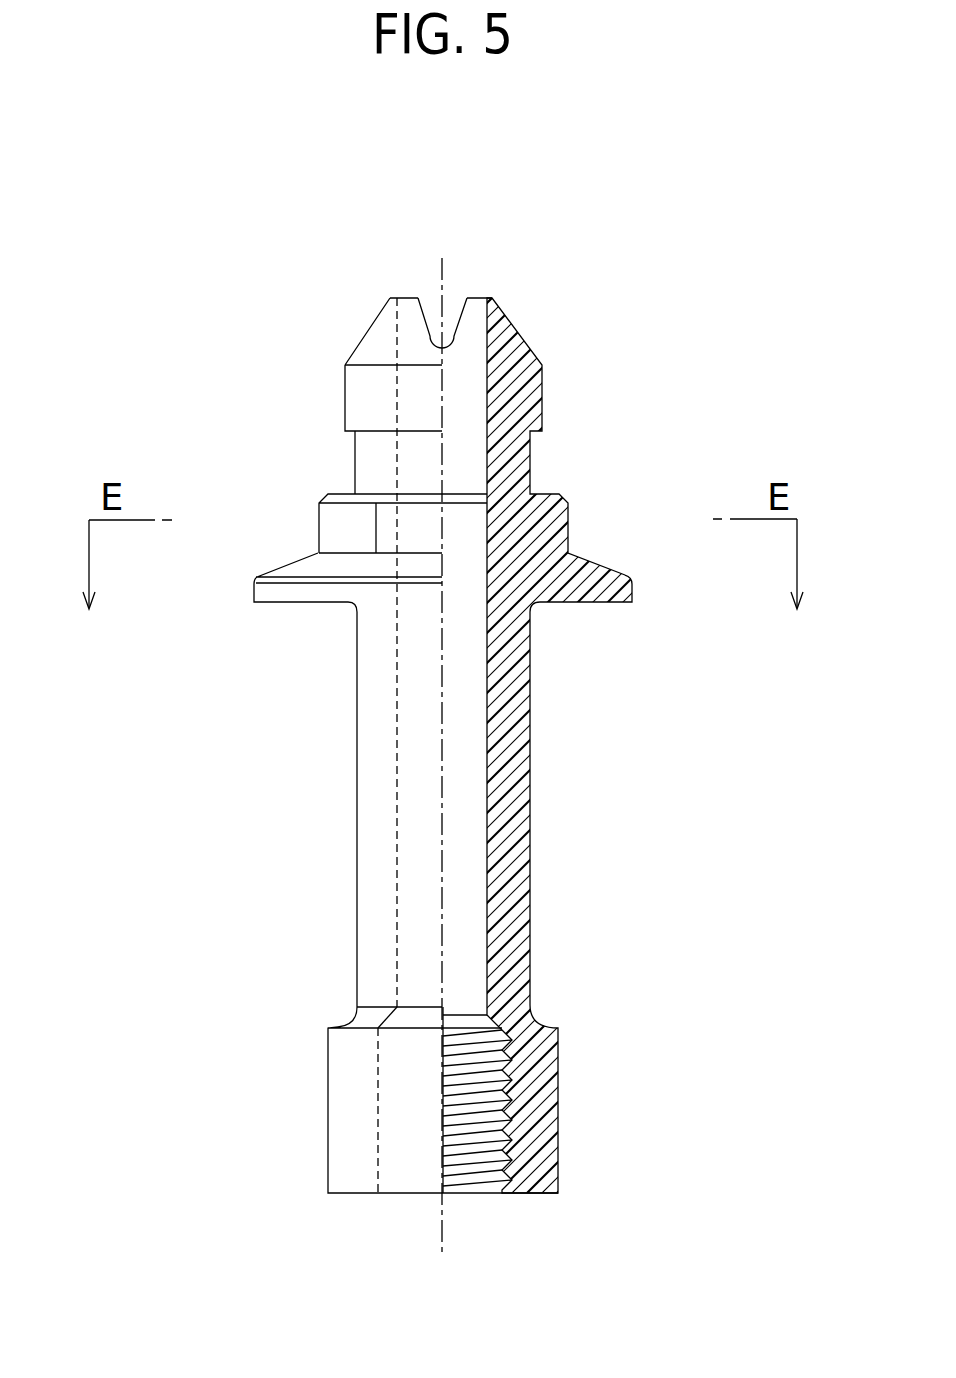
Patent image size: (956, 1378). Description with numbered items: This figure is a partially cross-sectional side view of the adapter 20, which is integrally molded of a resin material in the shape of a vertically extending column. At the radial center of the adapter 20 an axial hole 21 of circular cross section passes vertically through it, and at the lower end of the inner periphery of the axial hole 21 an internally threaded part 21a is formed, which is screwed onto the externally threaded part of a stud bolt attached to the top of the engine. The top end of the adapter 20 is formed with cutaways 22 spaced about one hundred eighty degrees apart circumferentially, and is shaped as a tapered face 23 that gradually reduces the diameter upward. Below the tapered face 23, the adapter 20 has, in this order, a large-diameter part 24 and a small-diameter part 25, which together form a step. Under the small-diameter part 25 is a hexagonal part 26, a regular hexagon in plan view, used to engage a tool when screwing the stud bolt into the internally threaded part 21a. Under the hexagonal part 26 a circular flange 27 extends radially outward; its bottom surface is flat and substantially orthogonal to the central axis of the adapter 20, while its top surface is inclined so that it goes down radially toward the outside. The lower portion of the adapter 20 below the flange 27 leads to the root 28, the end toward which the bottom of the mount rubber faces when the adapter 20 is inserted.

The adapter 20 is at (256, 244).
The axial hole 21 is at (490, 767).
The internally threaded part 21a is at (472, 1152).
The cutaway 22 is at (455, 322).
The tapered face 23 is at (365, 323).
The large-diameter part 24 is at (343, 403).
The small-diameter part 25 is at (355, 450).
The hexagonal part 26 is at (357, 531).
The flange 27 is at (262, 583).
The root 28 is at (531, 884).